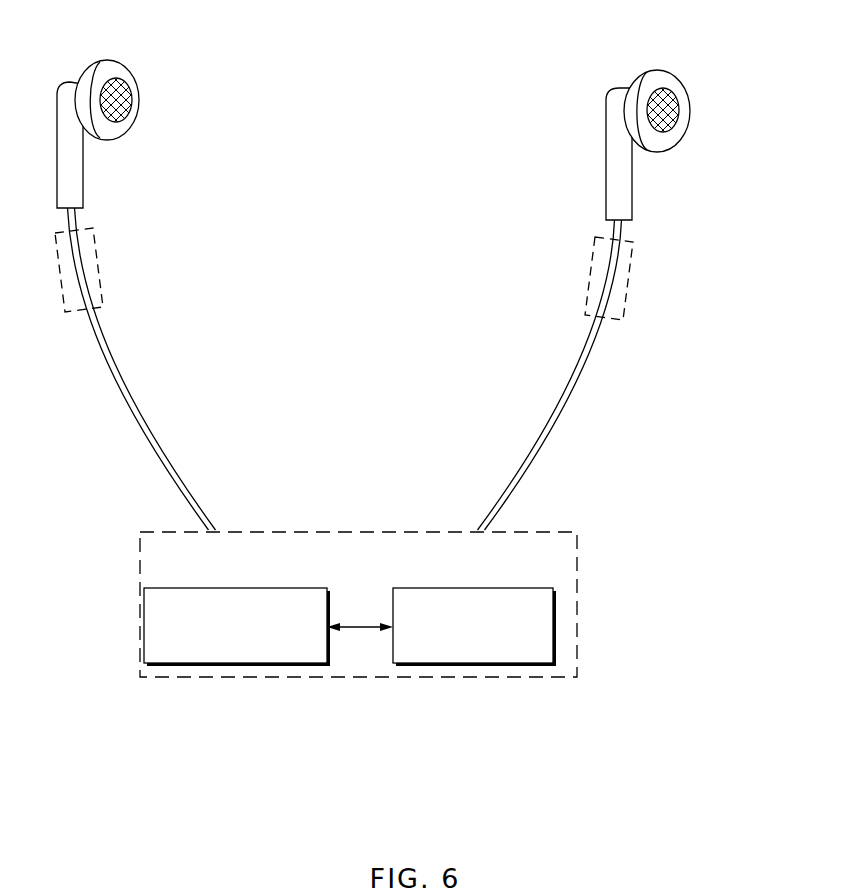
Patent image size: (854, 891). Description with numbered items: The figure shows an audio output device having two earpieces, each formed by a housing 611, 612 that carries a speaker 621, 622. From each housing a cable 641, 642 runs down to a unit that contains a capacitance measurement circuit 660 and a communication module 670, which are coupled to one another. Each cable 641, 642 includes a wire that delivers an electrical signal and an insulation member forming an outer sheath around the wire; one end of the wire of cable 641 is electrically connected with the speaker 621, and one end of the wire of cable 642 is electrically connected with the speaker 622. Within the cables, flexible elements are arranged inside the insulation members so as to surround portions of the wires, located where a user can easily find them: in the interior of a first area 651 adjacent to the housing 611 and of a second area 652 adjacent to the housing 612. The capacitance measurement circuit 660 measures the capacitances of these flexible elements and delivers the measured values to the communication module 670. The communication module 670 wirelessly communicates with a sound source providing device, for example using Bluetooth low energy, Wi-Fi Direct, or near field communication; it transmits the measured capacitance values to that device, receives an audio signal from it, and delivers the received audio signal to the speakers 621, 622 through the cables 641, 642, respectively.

The housing 611 is at (130, 75).
The housing 612 is at (612, 88).
The speaker 621 is at (125, 105).
The speaker 622 is at (672, 120).
The cable 641 is at (118, 355).
The cable 642 is at (590, 357).
The first area 651 is at (101, 287).
The second area 652 is at (630, 297).
The capacitance measurement circuit 660 is at (540, 588).
The communication module 670 is at (312, 588).